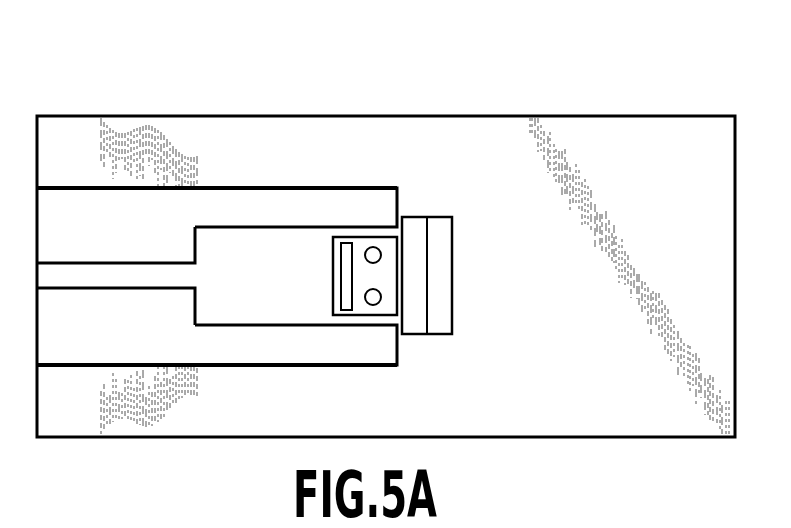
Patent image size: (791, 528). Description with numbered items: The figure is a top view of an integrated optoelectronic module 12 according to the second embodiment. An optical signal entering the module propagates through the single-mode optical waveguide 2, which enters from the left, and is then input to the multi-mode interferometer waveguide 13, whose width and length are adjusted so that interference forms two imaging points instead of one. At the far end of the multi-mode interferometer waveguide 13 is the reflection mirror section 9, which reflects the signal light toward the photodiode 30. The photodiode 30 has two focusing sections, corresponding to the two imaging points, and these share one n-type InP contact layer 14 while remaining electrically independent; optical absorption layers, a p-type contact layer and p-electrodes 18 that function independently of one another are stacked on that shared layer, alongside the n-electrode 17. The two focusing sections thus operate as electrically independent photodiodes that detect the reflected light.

The integrated optoelectronic module 12 is at (600, 88).
The single-mode optical waveguide 2 is at (190, 292).
The multi-mode interferometer waveguide 13 is at (392, 332).
The photodiode 30 is at (367, 258).
The n-type InP contact layer 14 is at (337, 259).
The n-electrode 17 is at (345, 290).
The p-electrode 18 is at (381, 297).
The reflection mirror section 9 is at (466, 217).